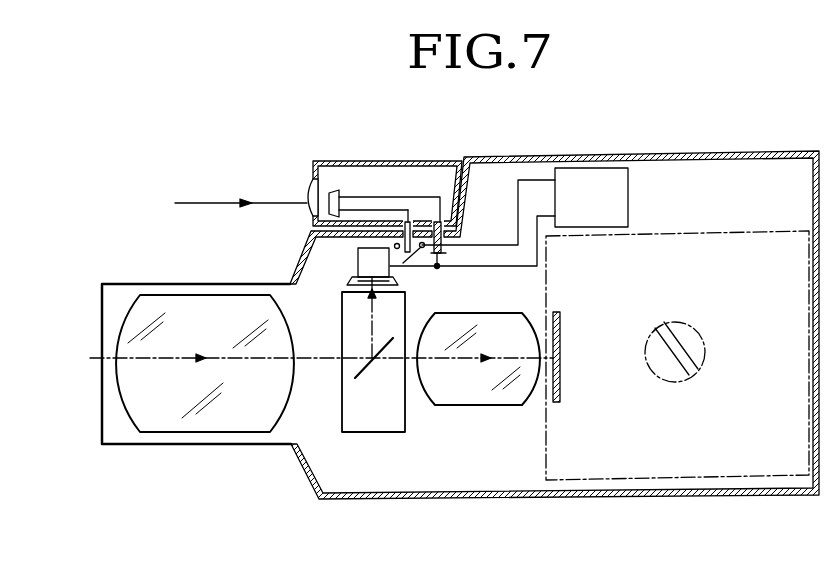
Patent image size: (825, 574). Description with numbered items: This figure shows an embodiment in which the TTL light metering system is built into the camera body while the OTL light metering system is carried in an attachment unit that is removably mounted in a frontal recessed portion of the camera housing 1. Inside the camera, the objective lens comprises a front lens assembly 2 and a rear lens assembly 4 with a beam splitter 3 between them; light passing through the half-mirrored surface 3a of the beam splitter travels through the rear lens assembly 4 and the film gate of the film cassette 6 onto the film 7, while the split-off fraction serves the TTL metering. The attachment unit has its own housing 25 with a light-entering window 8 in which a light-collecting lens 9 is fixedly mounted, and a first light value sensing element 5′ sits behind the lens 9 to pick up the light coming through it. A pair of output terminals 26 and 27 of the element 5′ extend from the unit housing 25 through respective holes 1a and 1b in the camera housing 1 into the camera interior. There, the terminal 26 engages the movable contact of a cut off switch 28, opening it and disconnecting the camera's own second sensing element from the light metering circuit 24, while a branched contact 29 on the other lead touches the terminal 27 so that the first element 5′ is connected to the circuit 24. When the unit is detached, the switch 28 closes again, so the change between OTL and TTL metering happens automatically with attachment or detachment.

The camera housing 1 is at (679, 157).
The hole 1a is at (398, 233).
The hole 1b is at (449, 226).
The front lens assembly 2 is at (200, 424).
The beam splitter 3 is at (355, 430).
The half-mirrored surface 3a is at (372, 380).
The rear lens assembly 4 is at (478, 398).
The first light value sensing element 5′ is at (333, 190).
The film cassette 6 is at (703, 257).
The film 7 is at (561, 326).
The light-entering window 8 is at (300, 191).
The light-collecting lens 9 is at (307, 212).
The light metering circuit 24 is at (603, 217).
The unit housing 25 is at (422, 161).
The output terminal 26 is at (402, 258).
The output terminal 27 is at (445, 238).
The cut off switch 28 is at (418, 255).
The branched contact 29 is at (440, 250).